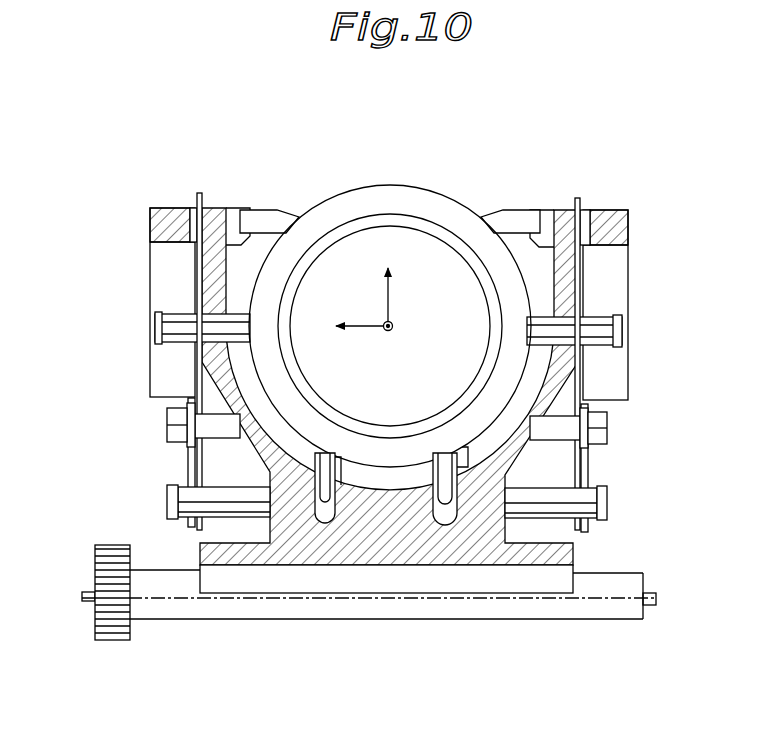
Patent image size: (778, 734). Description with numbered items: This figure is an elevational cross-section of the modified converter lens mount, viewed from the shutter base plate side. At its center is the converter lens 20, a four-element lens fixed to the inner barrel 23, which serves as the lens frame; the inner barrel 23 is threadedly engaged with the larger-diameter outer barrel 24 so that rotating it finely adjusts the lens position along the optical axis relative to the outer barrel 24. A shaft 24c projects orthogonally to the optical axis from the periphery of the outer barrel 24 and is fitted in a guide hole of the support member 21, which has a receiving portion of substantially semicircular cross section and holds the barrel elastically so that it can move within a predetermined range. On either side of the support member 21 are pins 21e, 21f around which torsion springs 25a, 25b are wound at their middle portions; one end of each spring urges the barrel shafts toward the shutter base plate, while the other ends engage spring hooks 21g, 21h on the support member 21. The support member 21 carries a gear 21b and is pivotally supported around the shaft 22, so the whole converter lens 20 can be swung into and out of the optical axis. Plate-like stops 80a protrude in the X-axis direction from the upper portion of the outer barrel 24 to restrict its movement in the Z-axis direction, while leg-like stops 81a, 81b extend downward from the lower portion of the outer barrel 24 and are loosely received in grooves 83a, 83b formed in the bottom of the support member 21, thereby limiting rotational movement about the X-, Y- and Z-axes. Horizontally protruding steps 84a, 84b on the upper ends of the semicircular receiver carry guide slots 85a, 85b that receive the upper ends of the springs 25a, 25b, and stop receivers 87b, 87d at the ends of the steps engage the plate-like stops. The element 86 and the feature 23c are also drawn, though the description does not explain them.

The converter lens 20 is at (376, 245).
The support member 21 is at (584, 553).
The gear 21b is at (118, 641).
The pin 21e is at (168, 424).
The pin 21f is at (608, 424).
The spring hook 21g is at (168, 500).
The spring hook 21h is at (608, 499).
The shaft 22 is at (82, 594).
The inner barrel 23 is at (318, 397).
The stopper 23c is at (475, 445).
The outer barrel 24 is at (431, 192).
The shaft 24c is at (603, 318).
The torsion spring 25a is at (188, 466).
The torsion spring 25b is at (588, 460).
The plate-like stop 80a is at (291, 215).
The leg-like stop 81a is at (330, 503).
The leg-like stop 81b is at (445, 503).
The groove 83a is at (320, 522).
The groove 83b is at (454, 520).
The step 84a is at (160, 208).
The step 84b is at (612, 210).
The guide slot 85a is at (195, 207).
The guide slot 85b is at (585, 210).
The rod 86 is at (199, 193).
The stop receiver 87b is at (254, 208).
The stop receiver 87d is at (490, 210).